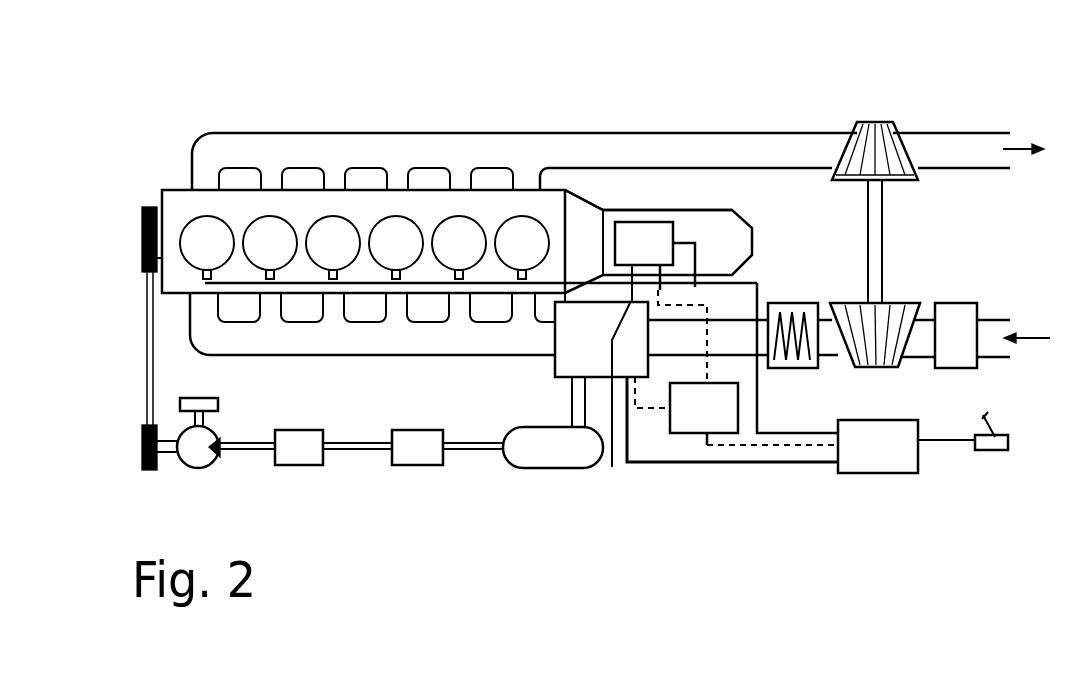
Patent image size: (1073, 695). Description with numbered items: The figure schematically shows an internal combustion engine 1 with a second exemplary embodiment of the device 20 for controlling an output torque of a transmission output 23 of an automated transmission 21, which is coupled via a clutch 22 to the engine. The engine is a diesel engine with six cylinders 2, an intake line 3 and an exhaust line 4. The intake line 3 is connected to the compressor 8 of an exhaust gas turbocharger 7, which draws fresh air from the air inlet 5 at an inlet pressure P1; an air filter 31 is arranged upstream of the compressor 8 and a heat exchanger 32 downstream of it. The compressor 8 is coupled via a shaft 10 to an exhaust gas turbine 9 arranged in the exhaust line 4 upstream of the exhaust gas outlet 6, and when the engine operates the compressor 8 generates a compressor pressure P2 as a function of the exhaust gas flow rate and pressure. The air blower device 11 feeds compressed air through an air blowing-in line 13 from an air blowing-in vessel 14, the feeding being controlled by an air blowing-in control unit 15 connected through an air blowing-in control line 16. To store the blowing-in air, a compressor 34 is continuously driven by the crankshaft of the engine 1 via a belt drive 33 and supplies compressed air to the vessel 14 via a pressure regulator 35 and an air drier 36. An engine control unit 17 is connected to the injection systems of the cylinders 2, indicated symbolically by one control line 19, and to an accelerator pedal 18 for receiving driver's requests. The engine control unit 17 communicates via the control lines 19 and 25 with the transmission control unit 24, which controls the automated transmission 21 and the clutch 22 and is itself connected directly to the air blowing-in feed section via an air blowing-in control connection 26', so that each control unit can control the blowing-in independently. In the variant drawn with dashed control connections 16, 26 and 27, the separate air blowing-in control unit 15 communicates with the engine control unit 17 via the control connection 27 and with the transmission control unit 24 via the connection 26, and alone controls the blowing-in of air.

The internal combustion engine 1 is at (165, 188).
The cylinders 2 is at (205, 235).
The intake line 3 is at (358, 340).
The exhaust line 4 is at (565, 150).
The air inlet 5 is at (997, 320).
The exhaust gas outlet 6 is at (980, 130).
The exhaust gas turbocharger 7 is at (921, 88).
The compressor 8 is at (895, 365).
The exhaust gas turbine 9 is at (876, 122).
The shaft 10 is at (880, 212).
The air blower device 11 is at (629, 488).
The air blowing-in line 13 is at (580, 400).
The air blowing-in vessel 14 is at (536, 449).
The air blowing-in control unit 15 is at (722, 413).
The air blowing-in control line 16 is at (653, 410).
The engine control unit 17 is at (880, 462).
The accelerator pedal 18 is at (990, 445).
The control line 19 is at (305, 288).
The device for controlling an output torque 20 is at (790, 70).
The automated transmission 21 is at (684, 222).
The clutch 22 is at (587, 224).
The transmission output 23 is at (742, 230).
The transmission control unit 24 is at (632, 245).
The engine control connection 25 is at (698, 247).
The air blowing-in control connection 26 is at (679, 298).
The air blowing-in control connection 26' is at (607, 423).
The control connection 27 is at (760, 445).
The air filter 31 is at (950, 303).
The heat exchanger 32 is at (800, 308).
The belt drive 33 is at (145, 342).
The compressor 34 is at (192, 458).
The pressure regulator 35 is at (292, 455).
The air drier 36 is at (410, 458).
The inlet pressure P1 is at (1003, 351).
The compressor pressure P2 is at (833, 342).